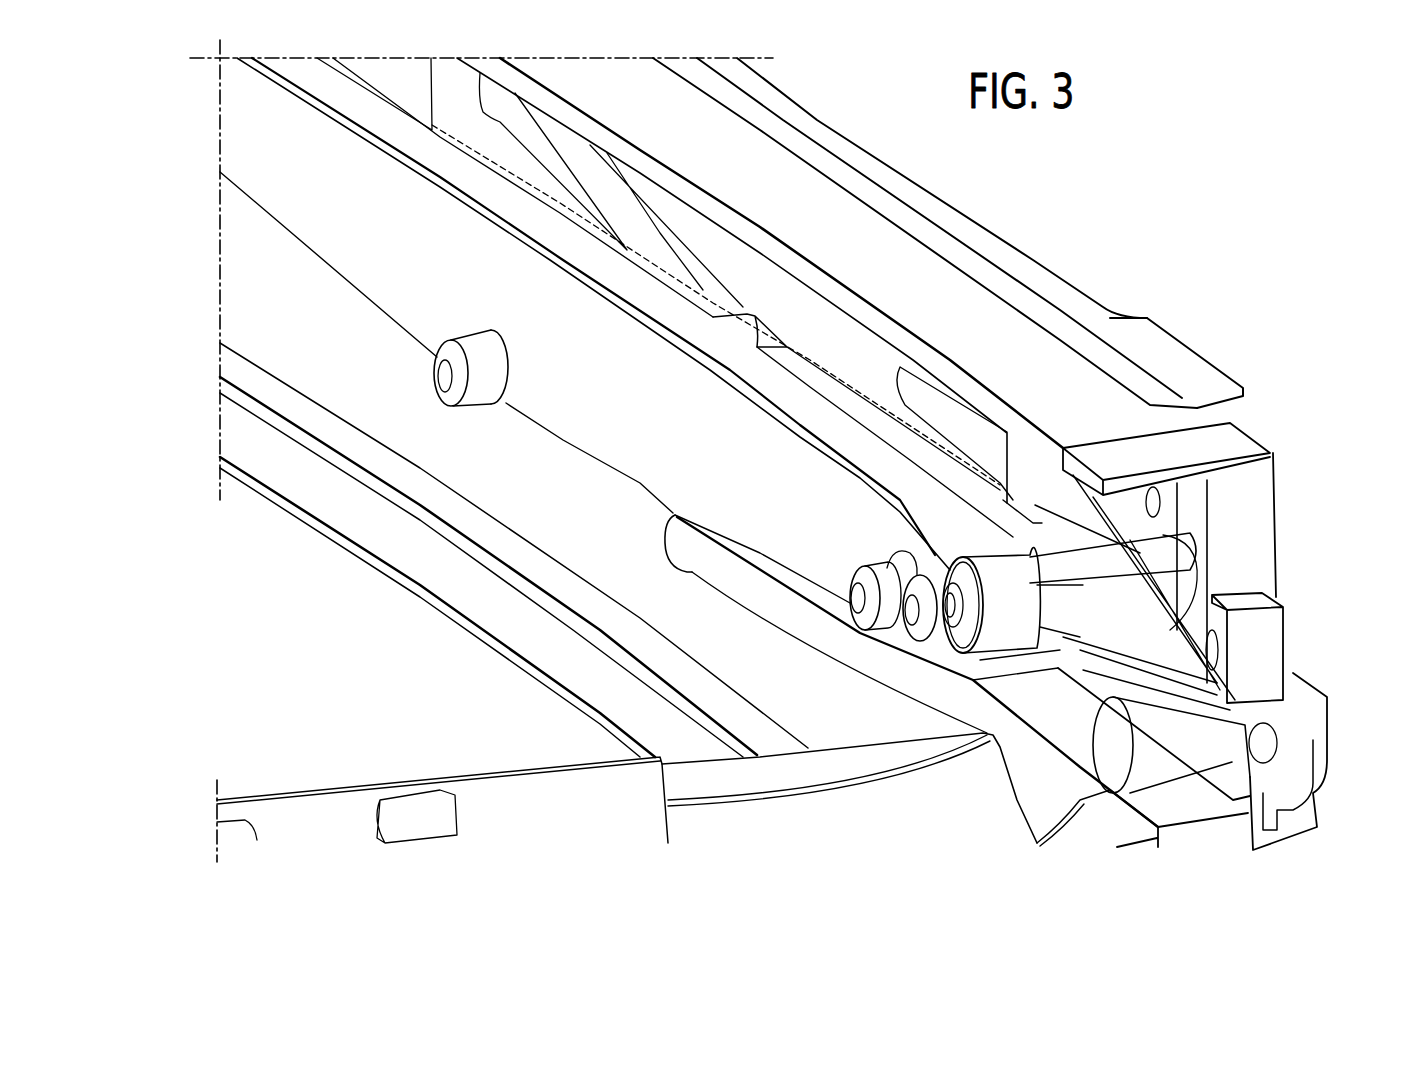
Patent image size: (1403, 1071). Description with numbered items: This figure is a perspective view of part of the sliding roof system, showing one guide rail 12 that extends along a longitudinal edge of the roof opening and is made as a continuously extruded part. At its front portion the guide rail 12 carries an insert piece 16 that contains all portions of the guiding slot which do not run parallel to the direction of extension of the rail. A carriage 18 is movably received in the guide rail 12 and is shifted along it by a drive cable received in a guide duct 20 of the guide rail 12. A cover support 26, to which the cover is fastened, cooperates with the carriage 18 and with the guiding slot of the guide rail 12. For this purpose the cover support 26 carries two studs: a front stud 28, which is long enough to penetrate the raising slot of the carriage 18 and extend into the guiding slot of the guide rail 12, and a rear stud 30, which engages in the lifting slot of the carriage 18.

The guide rail 12 is at (977, 238).
The insert piece 16 is at (1250, 537).
The carriage 18 is at (1238, 623).
The guide duct 20 is at (1260, 743).
The cover support 26 is at (252, 140).
The front stud 28 is at (1160, 550).
The rear stud 30 is at (745, 327).